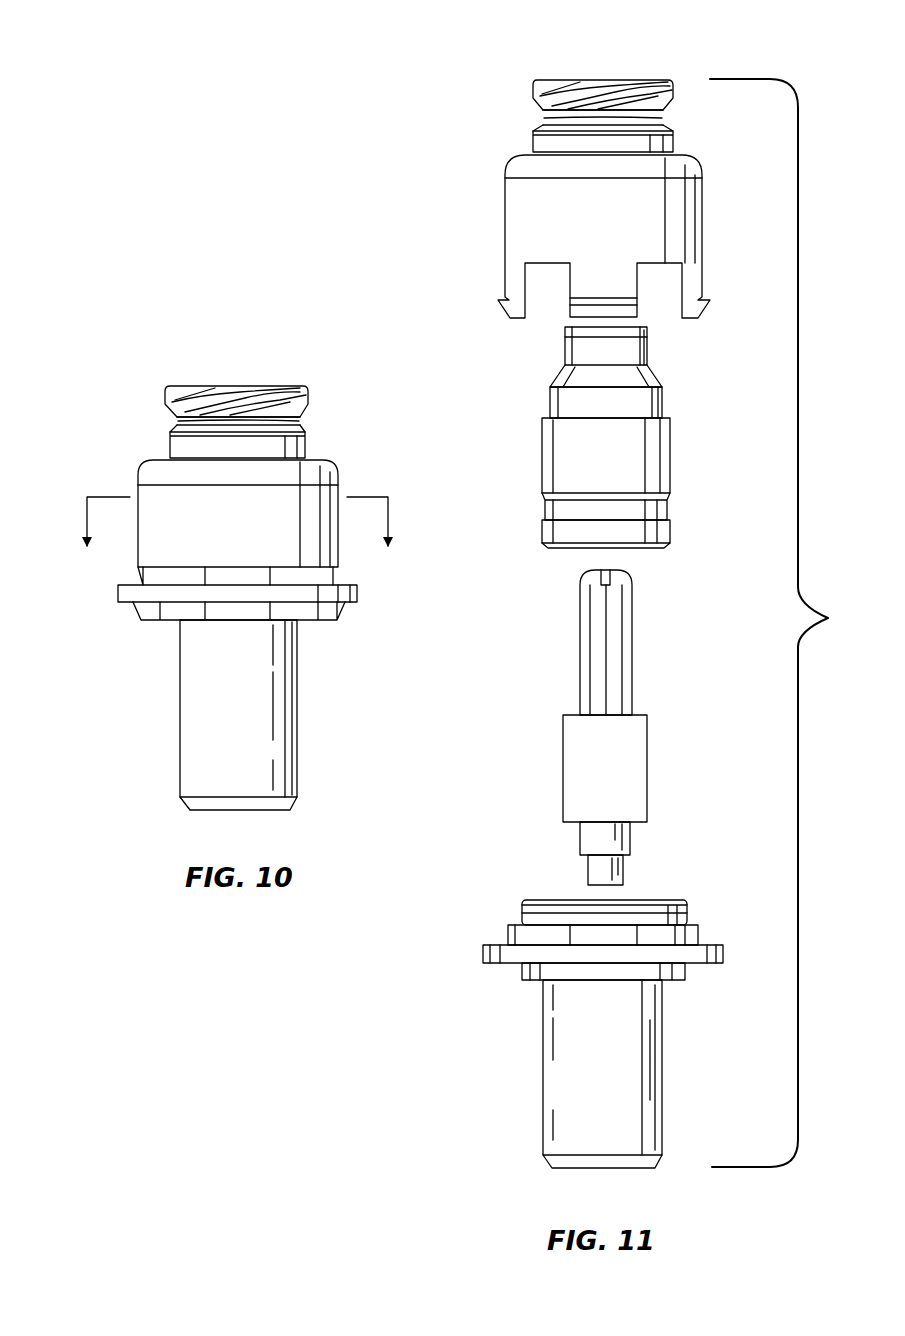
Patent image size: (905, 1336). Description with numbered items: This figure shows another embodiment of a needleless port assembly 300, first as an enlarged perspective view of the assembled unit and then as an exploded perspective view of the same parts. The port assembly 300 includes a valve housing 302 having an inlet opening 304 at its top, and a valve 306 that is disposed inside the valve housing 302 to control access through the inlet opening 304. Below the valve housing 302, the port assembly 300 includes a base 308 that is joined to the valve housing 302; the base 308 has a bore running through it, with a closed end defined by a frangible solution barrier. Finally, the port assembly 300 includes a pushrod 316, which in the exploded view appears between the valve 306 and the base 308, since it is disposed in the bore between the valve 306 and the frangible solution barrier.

In FIG. 10, the port assembly 300 is at (128, 417).
In FIG. 11, the port assembly 300 is at (503, 117).
In FIG. 10, the valve housing 302 is at (320, 481).
In FIG. 11, the valve housing 302 is at (688, 190).
In FIG. 11, the inlet opening 304 is at (592, 80).
In FIG. 11, the valve 306 is at (645, 441).
In FIG. 10, the base 308 is at (271, 690).
In FIG. 11, the base 308 is at (648, 1023).
In FIG. 11, the pushrod 316 is at (613, 687).